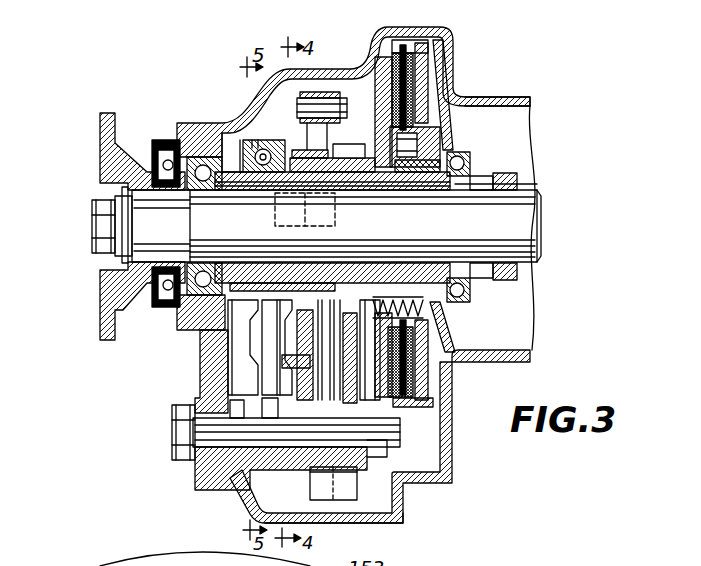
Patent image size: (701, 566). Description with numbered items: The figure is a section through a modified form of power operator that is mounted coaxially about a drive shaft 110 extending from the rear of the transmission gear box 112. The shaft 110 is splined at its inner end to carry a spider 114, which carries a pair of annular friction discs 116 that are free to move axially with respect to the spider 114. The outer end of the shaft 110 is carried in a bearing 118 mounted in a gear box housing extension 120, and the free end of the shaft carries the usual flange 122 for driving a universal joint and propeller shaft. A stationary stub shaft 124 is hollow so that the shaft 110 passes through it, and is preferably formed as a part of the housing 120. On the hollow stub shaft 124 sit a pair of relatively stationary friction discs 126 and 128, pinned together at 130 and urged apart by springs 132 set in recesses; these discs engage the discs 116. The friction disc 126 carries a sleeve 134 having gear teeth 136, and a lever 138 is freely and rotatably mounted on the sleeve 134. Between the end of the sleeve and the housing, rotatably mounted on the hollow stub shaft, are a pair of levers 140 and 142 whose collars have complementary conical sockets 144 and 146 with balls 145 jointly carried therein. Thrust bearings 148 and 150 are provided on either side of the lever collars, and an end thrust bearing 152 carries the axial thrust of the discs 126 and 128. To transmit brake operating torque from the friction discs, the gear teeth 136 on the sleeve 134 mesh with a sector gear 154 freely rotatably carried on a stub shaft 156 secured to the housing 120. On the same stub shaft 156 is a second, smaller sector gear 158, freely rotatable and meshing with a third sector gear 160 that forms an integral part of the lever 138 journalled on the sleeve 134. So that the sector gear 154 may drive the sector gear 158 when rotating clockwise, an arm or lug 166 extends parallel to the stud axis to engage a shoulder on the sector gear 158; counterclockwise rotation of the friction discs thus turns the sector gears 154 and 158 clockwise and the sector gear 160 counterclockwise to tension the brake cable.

The drive shaft 110 is at (508, 213).
The transmission gear box 112 is at (523, 96).
The spider 114 is at (427, 160).
The annular friction discs 116 is at (408, 395).
The bearing 118 is at (197, 157).
The gear box housing extension 120 is at (382, 523).
The flange 122 is at (100, 318).
The stationary stub shaft 124 is at (403, 182).
The friction disc 126 is at (380, 57).
The friction disc 128 is at (420, 70).
The pins 130 is at (440, 143).
The springs 132 is at (428, 308).
The sleeve 134 is at (345, 165).
The gear teeth 136 is at (350, 150).
The lever 138 is at (318, 92).
The lever 140 is at (243, 353).
The lever 142 is at (263, 343).
The conical socket 144 is at (262, 150).
The balls 145 is at (254, 150).
The conical socket 146 is at (246, 152).
The thrust bearing 148 is at (240, 132).
The thrust bearing 150 is at (268, 155).
The end thrust bearing 152 is at (466, 158).
The sector gear 154 is at (350, 385).
The stub shaft 156 is at (348, 486).
The second sector gear 158 is at (172, 412).
The third sector gear 160 is at (290, 382).
The arm or lug 166 is at (358, 478).